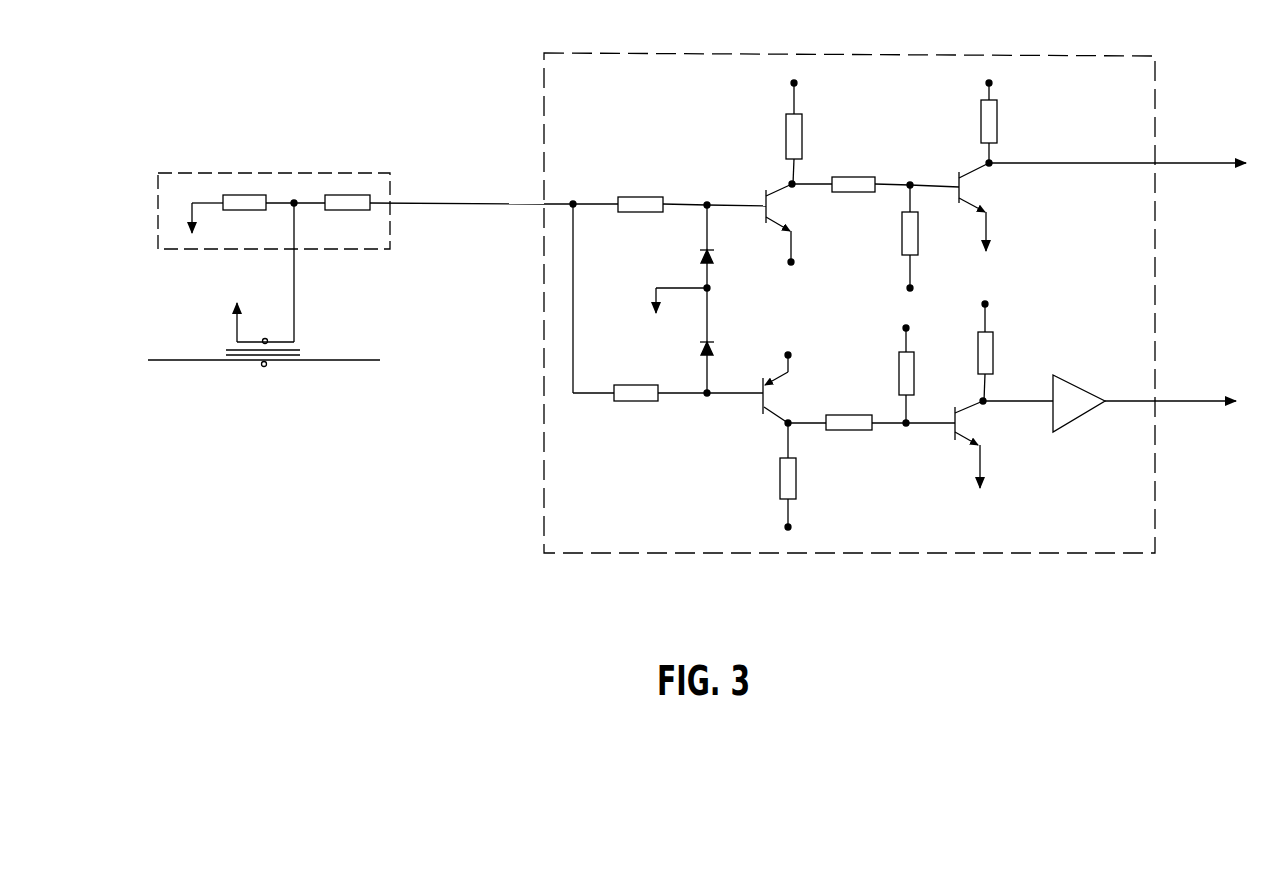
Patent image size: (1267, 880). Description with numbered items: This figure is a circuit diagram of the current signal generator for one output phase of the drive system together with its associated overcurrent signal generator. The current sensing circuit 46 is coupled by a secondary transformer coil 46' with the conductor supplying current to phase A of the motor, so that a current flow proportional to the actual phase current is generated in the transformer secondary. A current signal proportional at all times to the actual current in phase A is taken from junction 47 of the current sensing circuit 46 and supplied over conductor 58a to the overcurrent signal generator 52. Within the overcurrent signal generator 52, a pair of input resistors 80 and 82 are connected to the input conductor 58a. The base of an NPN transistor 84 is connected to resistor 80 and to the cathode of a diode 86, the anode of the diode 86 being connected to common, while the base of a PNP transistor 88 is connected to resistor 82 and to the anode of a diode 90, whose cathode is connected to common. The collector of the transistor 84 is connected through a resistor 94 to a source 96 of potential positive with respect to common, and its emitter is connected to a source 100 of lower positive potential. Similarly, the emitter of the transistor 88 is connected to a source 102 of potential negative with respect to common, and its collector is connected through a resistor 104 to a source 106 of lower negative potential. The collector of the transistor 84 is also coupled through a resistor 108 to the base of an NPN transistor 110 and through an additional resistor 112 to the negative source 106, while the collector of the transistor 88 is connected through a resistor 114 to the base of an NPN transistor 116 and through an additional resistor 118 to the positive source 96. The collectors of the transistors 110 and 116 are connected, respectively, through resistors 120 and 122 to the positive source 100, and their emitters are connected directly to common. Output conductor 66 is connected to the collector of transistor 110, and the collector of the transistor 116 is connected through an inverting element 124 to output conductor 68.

The current sensing circuit 46 is at (351, 194).
The junction 47 is at (292, 207).
The secondary transformer coil 46' is at (264, 283).
The conductor 58a is at (420, 204).
The overcurrent signal generator 52 is at (723, 52).
The input resistor 80 is at (645, 197).
The input resistor 82 is at (639, 386).
The NPN transistor 84 is at (760, 194).
The diode 86 is at (714, 251).
The PNP transistor 88 is at (754, 408).
The diode 90 is at (713, 341).
The resistor 94 is at (801, 125).
The source of positive potential 96 is at (792, 83).
The source of lower positive potential 100 is at (794, 262).
The source of negative potential 102 is at (788, 355).
The resistor 104 is at (798, 480).
The source of negative potential 106 is at (908, 288).
The resistor 108 is at (855, 176).
The NPN transistor 110 is at (976, 186).
The additional resistor 112 is at (900, 229).
The resistor 114 is at (847, 415).
The NPN transistor 116 is at (978, 427).
The additional resistor 118 is at (899, 366).
The resistor 120 is at (999, 126).
The resistor 122 is at (993, 351).
The inverting element 124 is at (1090, 388).
The output conductor 66 is at (1200, 163).
The output conductor 68 is at (1197, 401).